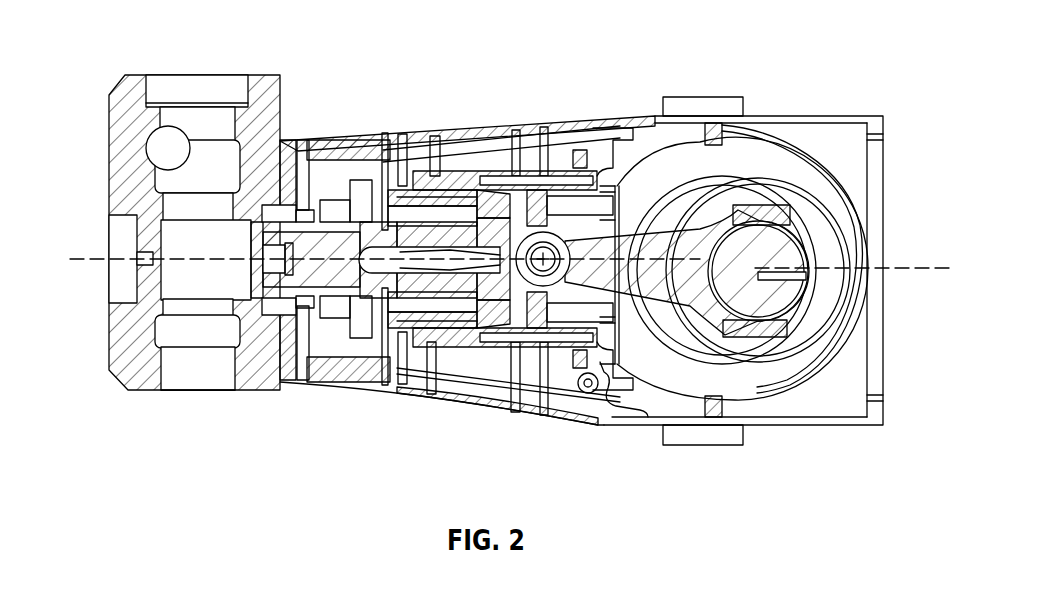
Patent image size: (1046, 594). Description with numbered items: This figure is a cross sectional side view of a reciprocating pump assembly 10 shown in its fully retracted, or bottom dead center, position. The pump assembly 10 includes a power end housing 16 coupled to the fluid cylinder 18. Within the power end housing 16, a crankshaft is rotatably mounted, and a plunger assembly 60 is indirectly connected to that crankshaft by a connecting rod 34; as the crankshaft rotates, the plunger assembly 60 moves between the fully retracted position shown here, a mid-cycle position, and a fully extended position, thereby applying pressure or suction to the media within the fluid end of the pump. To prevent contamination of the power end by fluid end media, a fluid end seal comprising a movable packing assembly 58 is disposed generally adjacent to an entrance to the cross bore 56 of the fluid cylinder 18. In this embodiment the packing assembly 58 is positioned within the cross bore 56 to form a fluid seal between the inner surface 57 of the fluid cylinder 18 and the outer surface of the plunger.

The reciprocating pump assembly 10 is at (113, 50).
The power end housing 16 is at (833, 110).
The fluid cylinder 18 is at (108, 172).
The connecting rod 34 is at (697, 307).
The cross bore 56 is at (120, 280).
The inner surface 57 is at (282, 214).
The movable packing assembly 58 is at (315, 212).
The plunger assembly 60 is at (364, 188).